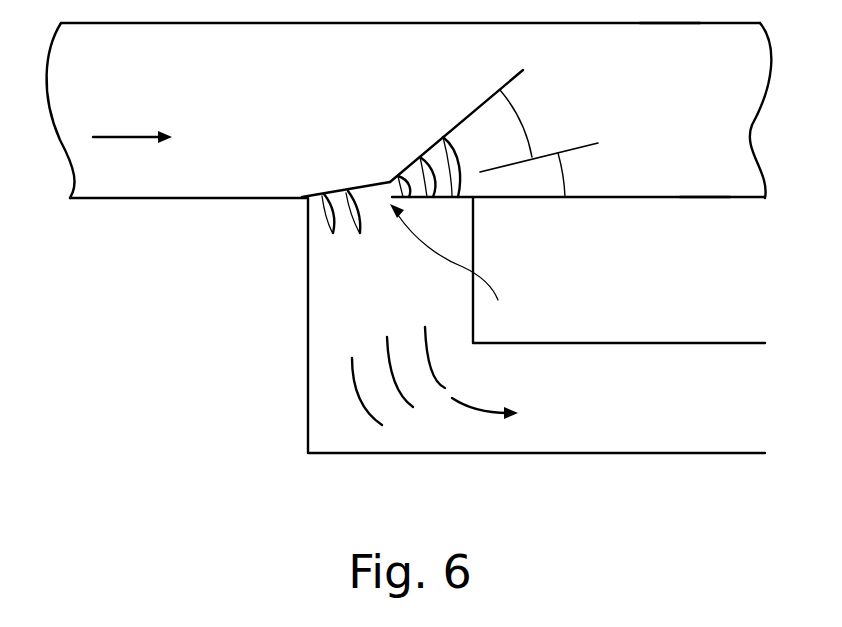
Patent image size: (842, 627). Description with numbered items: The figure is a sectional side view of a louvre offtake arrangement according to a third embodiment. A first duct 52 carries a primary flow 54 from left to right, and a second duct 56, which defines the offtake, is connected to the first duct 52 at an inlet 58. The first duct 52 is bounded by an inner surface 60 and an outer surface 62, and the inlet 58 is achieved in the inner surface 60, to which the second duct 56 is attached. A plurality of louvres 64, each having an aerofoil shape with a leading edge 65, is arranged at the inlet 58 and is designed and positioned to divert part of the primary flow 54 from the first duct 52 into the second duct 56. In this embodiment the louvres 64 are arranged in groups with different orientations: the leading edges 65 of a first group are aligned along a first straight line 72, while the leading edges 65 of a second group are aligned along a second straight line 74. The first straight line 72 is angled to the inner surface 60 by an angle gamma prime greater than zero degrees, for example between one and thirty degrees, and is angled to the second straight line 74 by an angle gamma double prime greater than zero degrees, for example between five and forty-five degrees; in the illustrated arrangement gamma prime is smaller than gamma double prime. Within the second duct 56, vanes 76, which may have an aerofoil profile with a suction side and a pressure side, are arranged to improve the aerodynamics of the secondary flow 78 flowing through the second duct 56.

The first duct 52 is at (124, 62).
The primary flow 54 is at (118, 138).
The second duct 56 is at (404, 297).
The inlet 58 is at (455, 268).
The inner surface 60 is at (700, 198).
The outer surface 62 is at (673, 23).
The louvres 64 is at (326, 208).
The leading edge 65 is at (405, 187).
The first straight line 72 is at (340, 192).
The second straight line 74 is at (485, 104).
The vanes 76 is at (440, 385).
The secondary flow 78 is at (480, 405).